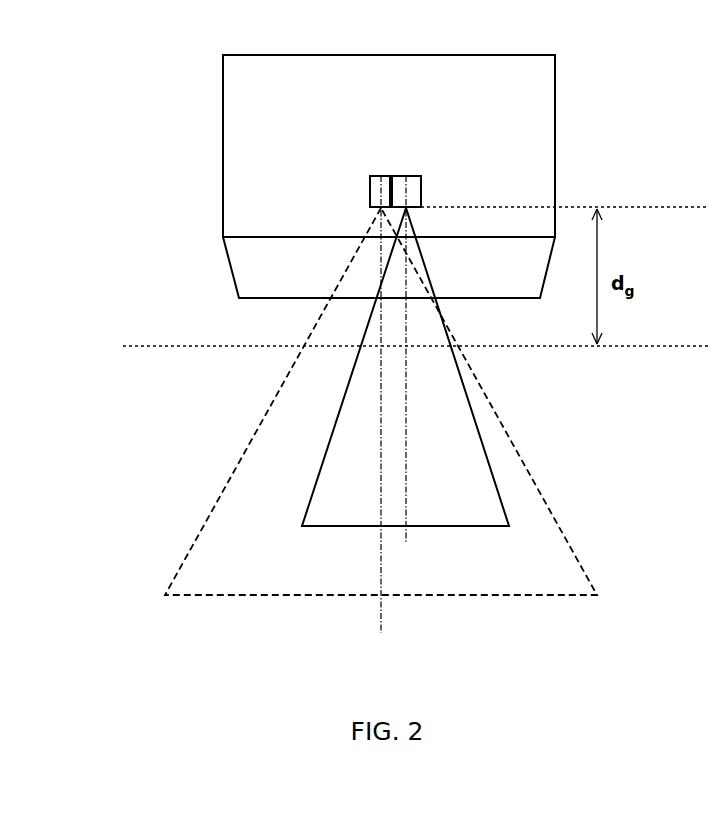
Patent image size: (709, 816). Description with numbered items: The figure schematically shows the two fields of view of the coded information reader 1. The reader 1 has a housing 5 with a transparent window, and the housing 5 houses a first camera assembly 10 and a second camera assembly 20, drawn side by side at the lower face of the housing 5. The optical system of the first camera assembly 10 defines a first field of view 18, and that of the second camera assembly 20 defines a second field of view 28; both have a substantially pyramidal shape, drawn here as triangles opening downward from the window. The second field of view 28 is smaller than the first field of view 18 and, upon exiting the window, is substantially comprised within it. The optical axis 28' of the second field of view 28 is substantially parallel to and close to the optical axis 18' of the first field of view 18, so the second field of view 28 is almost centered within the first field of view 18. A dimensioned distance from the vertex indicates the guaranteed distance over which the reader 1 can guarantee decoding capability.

The coded information reader 1 is at (428, 176).
The housing 5 is at (556, 123).
The first camera assembly 10 is at (382, 176).
The second camera assembly 20 is at (421, 176).
The first field of view 18 is at (402, 401).
The optical axis of the first field of view 18' is at (336, 432).
The second field of view 28 is at (481, 367).
The optical axis of the second field of view 28' is at (464, 384).